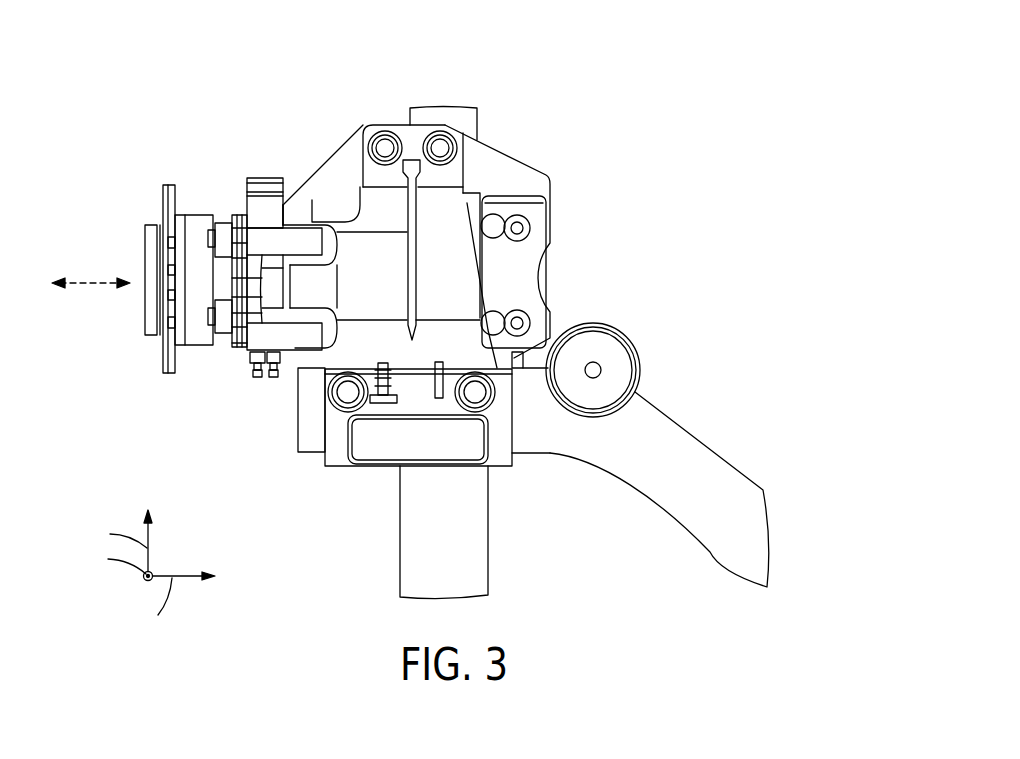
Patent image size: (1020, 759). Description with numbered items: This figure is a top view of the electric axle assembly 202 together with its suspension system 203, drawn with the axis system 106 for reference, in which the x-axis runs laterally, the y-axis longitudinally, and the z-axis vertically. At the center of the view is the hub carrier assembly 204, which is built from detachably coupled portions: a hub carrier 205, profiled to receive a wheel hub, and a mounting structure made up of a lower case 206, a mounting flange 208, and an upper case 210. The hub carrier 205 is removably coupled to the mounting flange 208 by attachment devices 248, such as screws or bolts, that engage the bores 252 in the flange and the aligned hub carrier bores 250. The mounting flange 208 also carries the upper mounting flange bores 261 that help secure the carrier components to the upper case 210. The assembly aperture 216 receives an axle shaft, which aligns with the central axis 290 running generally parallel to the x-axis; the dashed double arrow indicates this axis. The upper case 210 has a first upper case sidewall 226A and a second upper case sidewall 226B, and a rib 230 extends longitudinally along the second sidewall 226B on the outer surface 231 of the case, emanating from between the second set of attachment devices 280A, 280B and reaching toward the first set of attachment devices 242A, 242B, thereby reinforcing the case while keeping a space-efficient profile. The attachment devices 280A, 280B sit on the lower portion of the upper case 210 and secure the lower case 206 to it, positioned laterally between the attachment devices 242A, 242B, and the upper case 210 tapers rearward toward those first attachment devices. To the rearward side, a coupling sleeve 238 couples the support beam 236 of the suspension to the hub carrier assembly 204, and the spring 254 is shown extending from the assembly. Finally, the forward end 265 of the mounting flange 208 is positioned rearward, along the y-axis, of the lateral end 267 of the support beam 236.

The axis system 106 is at (178, 550).
The electric axle assembly 202 is at (748, 134).
The suspension system 203 is at (688, 118).
The hub carrier assembly 204 is at (601, 196).
The hub carrier 205 is at (120, 237).
The lower case 206 is at (368, 483).
The mounting flange 208 is at (230, 181).
The upper case 210 is at (349, 186).
The assembly aperture 216 is at (474, 258).
The first upper case sidewall 226A is at (314, 402).
The second upper case sidewall 226B is at (378, 193).
The rib 230 is at (413, 243).
The outer surface 231 is at (443, 298).
The support beam 236 is at (740, 450).
The coupling sleeve 238 is at (505, 445).
The first attachment device 242A is at (348, 394).
The first attachment device 242B is at (475, 395).
The attachment devices 248 is at (210, 238).
The hub carrier bores 250 is at (222, 236).
The bores 252 is at (238, 222).
The spring 254 is at (413, 570).
The upper mounting flange bores 261 is at (264, 197).
The forward end 265 is at (262, 356).
The lateral end 267 is at (298, 402).
The second attachment device 280A is at (385, 145).
The second attachment device 280B is at (448, 148).
The central axis 290 is at (97, 288).